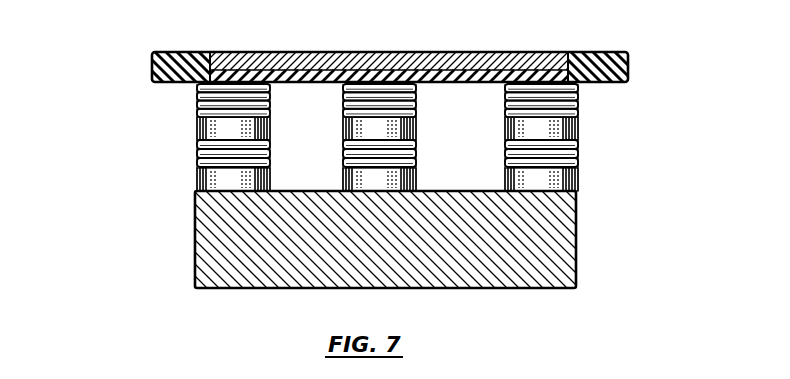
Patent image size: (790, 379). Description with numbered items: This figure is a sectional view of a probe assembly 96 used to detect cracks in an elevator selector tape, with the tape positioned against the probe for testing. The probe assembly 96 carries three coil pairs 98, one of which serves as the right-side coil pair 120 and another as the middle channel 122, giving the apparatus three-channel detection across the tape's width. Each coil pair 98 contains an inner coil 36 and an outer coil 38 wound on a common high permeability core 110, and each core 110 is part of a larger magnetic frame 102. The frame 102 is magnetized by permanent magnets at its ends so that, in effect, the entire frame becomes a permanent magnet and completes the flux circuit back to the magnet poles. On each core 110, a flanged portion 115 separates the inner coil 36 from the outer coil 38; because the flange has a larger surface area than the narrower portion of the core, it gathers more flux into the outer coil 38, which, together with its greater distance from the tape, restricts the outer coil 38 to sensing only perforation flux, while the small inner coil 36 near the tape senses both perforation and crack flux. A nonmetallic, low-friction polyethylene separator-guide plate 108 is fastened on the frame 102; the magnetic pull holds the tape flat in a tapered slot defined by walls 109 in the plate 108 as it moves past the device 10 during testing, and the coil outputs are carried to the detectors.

The thermal connector 10 is at (386, 62).
The inner coil 36 is at (343, 96).
The outer coil 38 is at (343, 153).
The probe assembly 96 is at (185, 204).
The coil pair 98 is at (190, 134).
The magnetic frame 102 is at (328, 242).
The separator-guide plate 108 is at (339, 51).
The walls 109 is at (178, 60).
The high permeability core 110 is at (343, 180).
The flanged portion 115 is at (343, 128).
The coil pair 120 is at (587, 148).
The middle channel 122 is at (421, 134).